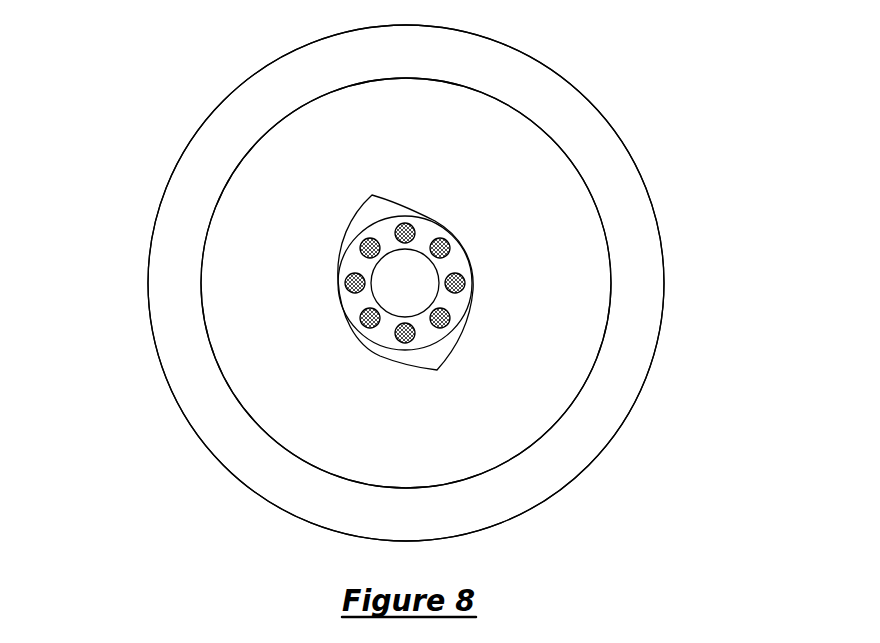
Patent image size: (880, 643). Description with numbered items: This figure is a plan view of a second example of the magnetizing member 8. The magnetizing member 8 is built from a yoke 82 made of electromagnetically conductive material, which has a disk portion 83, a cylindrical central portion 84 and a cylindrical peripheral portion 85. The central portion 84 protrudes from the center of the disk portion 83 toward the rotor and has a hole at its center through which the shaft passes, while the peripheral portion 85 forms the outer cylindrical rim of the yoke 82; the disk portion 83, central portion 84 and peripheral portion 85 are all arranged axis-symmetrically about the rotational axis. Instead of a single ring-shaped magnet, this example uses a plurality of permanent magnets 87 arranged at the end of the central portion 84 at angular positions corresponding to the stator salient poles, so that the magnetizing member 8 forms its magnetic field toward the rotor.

The magnetizing member 8 is at (676, 111).
The yoke 82 is at (273, 505).
The disk portion 83 is at (225, 305).
The central portion 84 is at (470, 266).
The peripheral portion 85 is at (537, 488).
The permanent magnets 87 is at (438, 240).